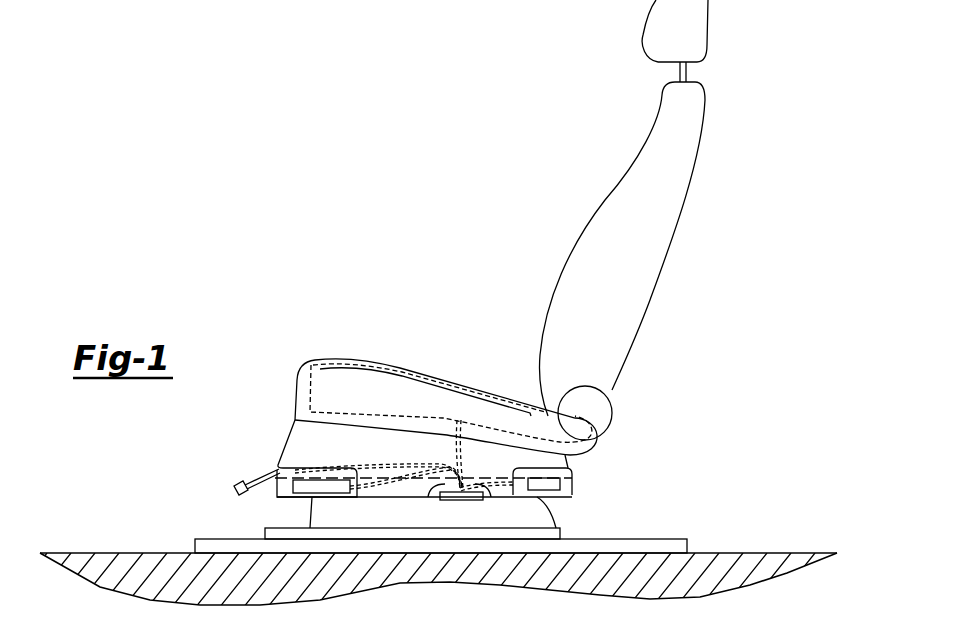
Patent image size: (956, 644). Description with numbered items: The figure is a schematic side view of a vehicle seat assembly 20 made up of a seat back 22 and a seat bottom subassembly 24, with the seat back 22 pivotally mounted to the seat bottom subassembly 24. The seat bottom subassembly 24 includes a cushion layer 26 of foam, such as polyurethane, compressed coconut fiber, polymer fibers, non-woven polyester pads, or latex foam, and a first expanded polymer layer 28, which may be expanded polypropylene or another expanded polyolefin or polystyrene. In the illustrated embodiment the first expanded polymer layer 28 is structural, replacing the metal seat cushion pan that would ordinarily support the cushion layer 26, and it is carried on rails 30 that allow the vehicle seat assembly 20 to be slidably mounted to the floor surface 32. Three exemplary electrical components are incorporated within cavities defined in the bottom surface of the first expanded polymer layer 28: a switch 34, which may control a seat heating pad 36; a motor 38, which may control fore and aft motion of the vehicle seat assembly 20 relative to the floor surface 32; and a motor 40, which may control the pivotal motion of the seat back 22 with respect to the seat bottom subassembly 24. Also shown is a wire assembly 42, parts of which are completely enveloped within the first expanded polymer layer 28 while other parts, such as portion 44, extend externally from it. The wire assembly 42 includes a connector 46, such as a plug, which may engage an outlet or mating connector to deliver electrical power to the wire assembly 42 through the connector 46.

The vehicle seat assembly 20 is at (482, 162).
The seat back 22 is at (655, 118).
The seat bottom subassembly 24 is at (426, 358).
The cushion layer 26 is at (598, 448).
The first expanded polymer layer 28 is at (572, 481).
The rails 30 is at (282, 527).
The floor surface 32 is at (100, 553).
The switch 34 is at (318, 487).
The heating pad 36 is at (498, 410).
The motor 38 is at (458, 503).
The motor 40 is at (549, 489).
The wire assembly 42 is at (488, 472).
The portion 44 is at (257, 478).
The connector 46 is at (236, 485).